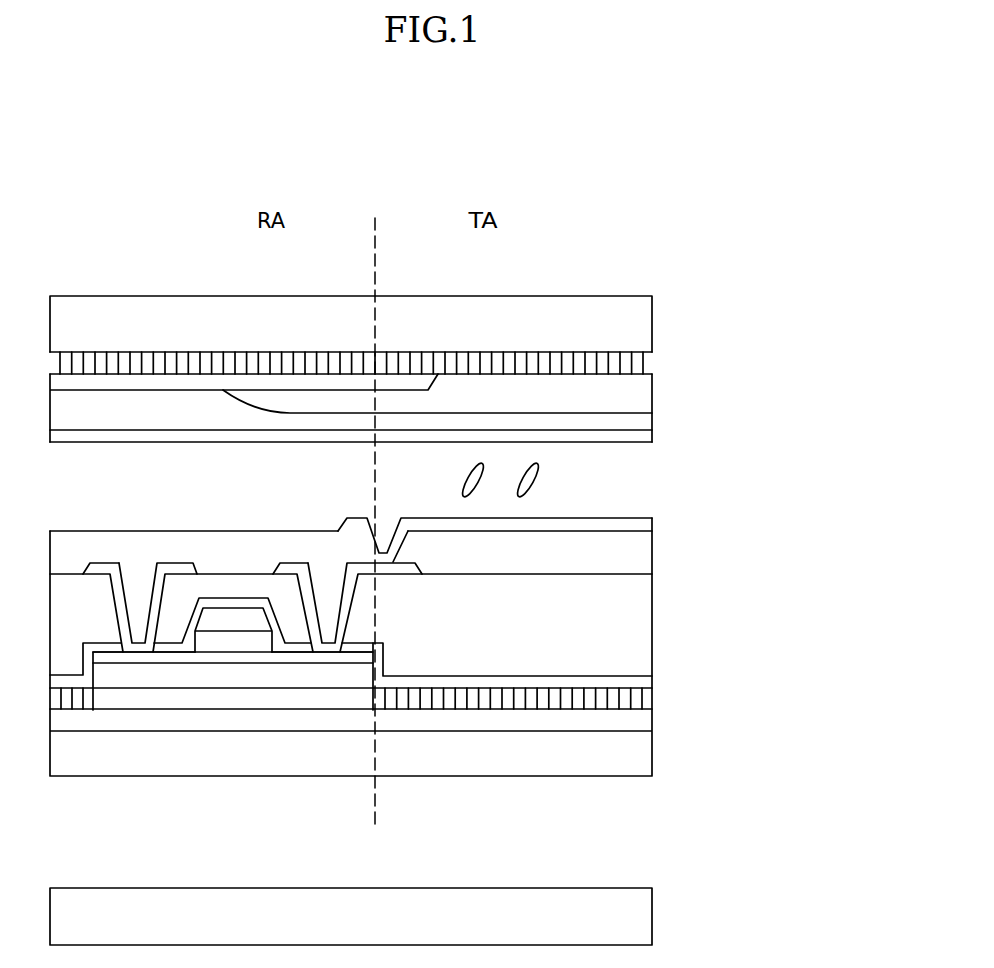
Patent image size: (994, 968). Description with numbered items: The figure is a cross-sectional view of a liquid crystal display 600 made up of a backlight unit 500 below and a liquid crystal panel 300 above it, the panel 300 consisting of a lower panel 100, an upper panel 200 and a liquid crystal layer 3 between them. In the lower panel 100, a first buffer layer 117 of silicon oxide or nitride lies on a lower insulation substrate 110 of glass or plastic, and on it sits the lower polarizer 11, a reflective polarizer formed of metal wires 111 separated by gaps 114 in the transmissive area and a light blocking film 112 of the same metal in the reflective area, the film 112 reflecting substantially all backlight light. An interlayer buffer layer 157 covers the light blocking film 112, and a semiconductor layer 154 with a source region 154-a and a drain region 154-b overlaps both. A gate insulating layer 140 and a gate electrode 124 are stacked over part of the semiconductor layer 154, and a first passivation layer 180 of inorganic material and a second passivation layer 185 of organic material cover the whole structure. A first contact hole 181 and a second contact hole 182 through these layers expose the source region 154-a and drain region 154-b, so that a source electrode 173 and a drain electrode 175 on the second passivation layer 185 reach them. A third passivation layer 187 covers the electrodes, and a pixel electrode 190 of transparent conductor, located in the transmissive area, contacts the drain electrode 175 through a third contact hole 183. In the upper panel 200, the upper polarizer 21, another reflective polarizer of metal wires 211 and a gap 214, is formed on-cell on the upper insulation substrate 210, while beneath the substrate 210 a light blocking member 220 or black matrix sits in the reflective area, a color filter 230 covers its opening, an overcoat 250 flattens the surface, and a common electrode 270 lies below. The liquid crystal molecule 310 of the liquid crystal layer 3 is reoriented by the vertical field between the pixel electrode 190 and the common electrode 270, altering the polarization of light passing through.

The liquid crystal display 600 is at (152, 168).
The lower panel 100 is at (712, 543).
The lower insulation substrate 110 is at (648, 756).
The metal wires 111 is at (545, 702).
The light blocking film 112 is at (242, 700).
The gaps 114 is at (469, 702).
The lower polarizer 11 is at (703, 238).
The first buffer layer 117 is at (648, 721).
The gate electrode 124 is at (233, 617).
The gate insulating layer 140 is at (217, 644).
The semiconductor layer 154 is at (278, 660).
The source region 154-a is at (113, 654).
The drain region 154-b is at (358, 655).
The interlayer buffer layer 157 is at (152, 676).
The source electrode 173 is at (102, 568).
The drain electrode 175 is at (292, 568).
The first passivation layer 180 is at (648, 683).
The first contact hole 181 is at (142, 600).
The second contact hole 182 is at (350, 607).
The third contact hole 183 is at (390, 548).
The second passivation layer 185 is at (648, 622).
The third passivation layer 187 is at (648, 556).
The pixel electrode 190 is at (438, 525).
The upper panel 200 is at (712, 313).
The upper insulation substrate 210 is at (648, 321).
The metal wires 211 is at (325, 362).
The gap 214 is at (314, 360).
The upper polarizer 21 is at (599, 239).
The light blocking member 220 is at (238, 386).
The color filter 230 is at (648, 391).
The overcoat 250 is at (648, 418).
The common electrode 270 is at (648, 443).
The liquid crystal panel 300 is at (758, 655).
The liquid crystal molecule 310 is at (537, 473).
The liquid crystal layer 3 is at (645, 482).
The backlight unit 500 is at (643, 918).